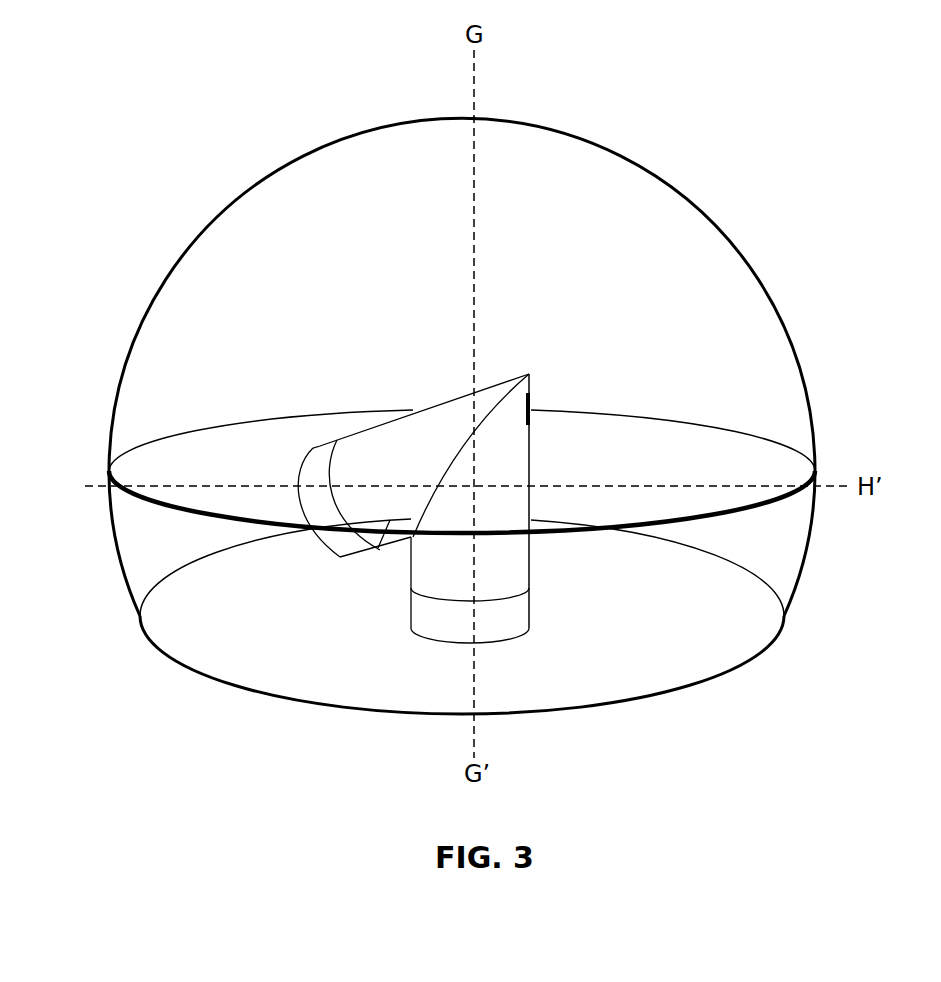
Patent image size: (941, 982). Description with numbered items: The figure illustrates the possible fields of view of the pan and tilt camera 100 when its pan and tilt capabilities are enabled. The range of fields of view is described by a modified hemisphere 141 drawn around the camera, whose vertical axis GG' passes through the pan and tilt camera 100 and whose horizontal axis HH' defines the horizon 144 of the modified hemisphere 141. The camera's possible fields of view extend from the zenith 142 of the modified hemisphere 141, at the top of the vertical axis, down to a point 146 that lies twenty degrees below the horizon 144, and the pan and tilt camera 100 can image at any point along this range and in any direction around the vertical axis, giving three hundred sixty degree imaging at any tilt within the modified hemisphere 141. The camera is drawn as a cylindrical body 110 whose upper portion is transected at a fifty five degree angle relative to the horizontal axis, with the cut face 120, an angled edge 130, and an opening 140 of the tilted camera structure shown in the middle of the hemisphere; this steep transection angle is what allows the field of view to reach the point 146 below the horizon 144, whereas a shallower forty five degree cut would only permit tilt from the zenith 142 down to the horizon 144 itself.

The pan and tilt camera 100 is at (462, 495).
The base pedestal 110 is at (529, 607).
The feed element 120 is at (521, 503).
The reflector edge 130 is at (413, 537).
The horn aperture 140 is at (340, 557).
The modified hemisphere 141 is at (313, 193).
The zenith 142 is at (487, 112).
The horizon 144 is at (213, 427).
The point below the horizon 146 is at (198, 568).